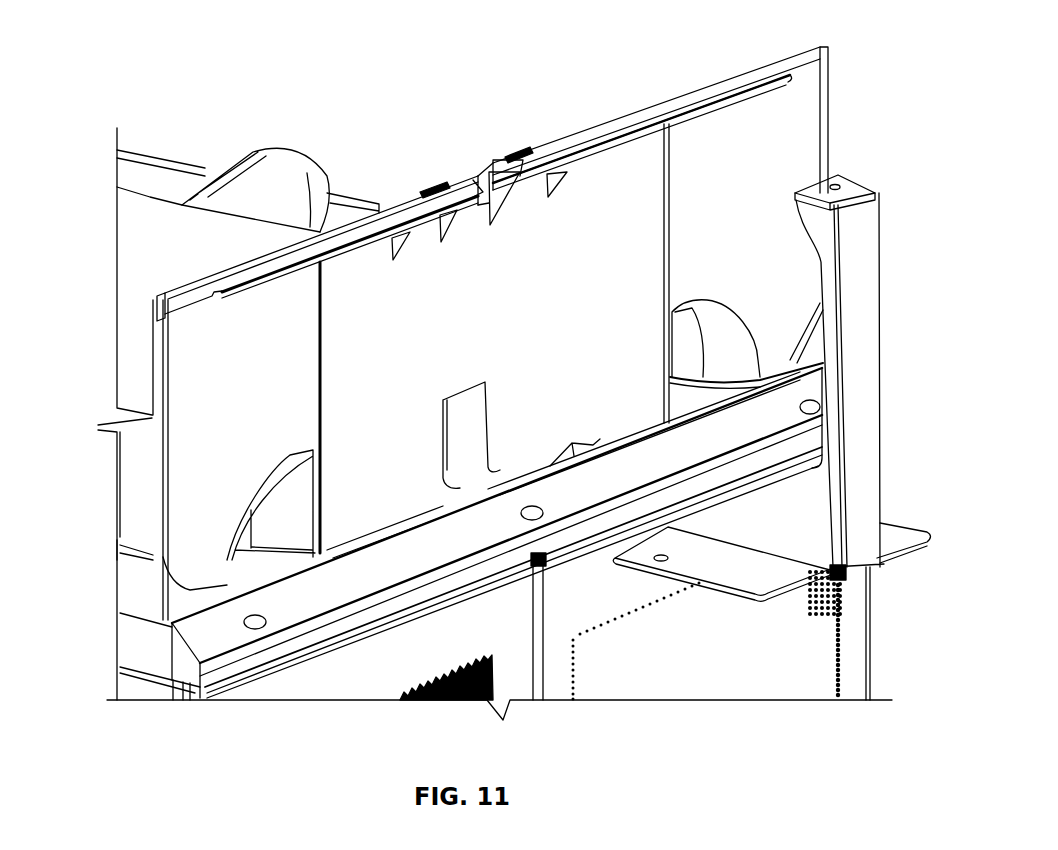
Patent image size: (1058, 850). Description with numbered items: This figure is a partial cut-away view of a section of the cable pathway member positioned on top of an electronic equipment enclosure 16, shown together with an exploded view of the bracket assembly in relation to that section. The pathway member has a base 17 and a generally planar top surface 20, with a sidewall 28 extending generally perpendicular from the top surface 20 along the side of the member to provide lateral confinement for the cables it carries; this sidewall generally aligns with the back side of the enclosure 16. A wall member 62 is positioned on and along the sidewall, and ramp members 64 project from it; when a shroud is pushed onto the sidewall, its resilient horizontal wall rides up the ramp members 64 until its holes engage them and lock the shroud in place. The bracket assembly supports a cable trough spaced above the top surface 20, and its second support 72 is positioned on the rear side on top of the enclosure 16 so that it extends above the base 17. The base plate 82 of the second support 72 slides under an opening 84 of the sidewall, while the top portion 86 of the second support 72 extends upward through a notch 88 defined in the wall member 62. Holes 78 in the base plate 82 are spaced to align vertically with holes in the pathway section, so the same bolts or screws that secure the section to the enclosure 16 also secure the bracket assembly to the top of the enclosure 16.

The electronic equipment enclosure 16 is at (855, 663).
The base 17 is at (106, 542).
The generally planar top surface 20 is at (181, 259).
The second sidewall 28 is at (640, 192).
The wall member 62 is at (568, 140).
The ramp members 64 is at (515, 151).
The second support 72 is at (860, 418).
The holes 78 is at (660, 554).
The base plate 82 is at (763, 578).
The opening 84 is at (472, 490).
The top portion 86 is at (858, 168).
The notch 88 is at (480, 180).